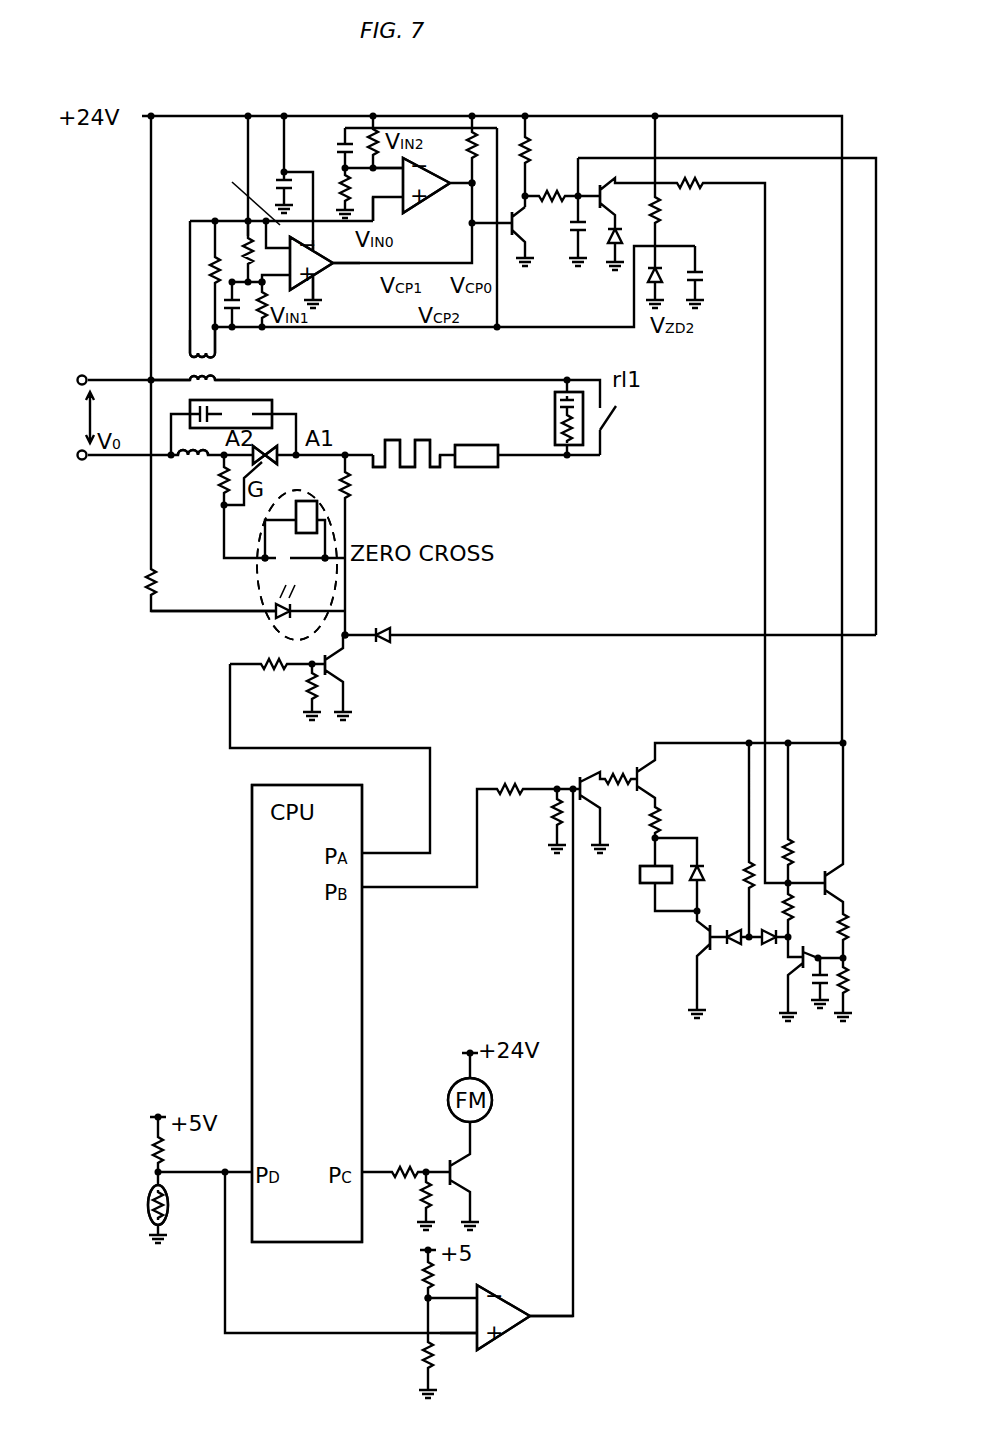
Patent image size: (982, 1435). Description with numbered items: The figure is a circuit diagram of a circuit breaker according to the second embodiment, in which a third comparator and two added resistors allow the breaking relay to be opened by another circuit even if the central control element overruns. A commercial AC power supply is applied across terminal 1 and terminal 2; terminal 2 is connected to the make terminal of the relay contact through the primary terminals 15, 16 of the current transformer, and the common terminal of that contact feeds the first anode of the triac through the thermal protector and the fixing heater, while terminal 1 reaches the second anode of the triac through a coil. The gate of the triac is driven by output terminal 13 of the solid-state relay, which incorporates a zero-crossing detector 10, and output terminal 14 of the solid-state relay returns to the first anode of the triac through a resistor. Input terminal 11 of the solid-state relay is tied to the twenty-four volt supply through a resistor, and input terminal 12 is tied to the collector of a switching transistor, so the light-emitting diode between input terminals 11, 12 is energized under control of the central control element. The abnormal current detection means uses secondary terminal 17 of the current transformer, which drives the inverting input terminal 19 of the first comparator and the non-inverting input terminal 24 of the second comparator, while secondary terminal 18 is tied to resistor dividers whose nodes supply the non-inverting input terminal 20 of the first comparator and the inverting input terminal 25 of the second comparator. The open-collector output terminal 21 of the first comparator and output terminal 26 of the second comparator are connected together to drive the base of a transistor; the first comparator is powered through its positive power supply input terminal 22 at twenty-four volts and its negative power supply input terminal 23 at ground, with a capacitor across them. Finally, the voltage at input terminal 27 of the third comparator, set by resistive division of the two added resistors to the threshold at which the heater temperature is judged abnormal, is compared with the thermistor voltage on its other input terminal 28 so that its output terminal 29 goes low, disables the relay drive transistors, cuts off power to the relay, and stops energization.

The terminal 1 is at (67, 456).
The terminal 2 is at (67, 381).
The zero-crossing detector 10 is at (332, 518).
The input terminal of the solid-state relay 11 is at (260, 614).
The input terminal of the solid-state relay 12 is at (348, 633).
The output terminal of the solid-state relay 13 is at (262, 563).
The output terminal of the solid-state relay 14 is at (338, 572).
The primary terminal 15 is at (165, 383).
The primary terminal 16 is at (210, 390).
The secondary terminal 17 is at (180, 360).
The secondary terminal 18 is at (214, 348).
The inverting input terminal of the comparator CP1 19 is at (246, 225).
The non-inverting input terminal of the comparator CP1 20 is at (269, 272).
The output terminal of the comparator CP1 21 is at (336, 268).
The positive power supply input terminal of the comparator CP1 22 is at (331, 243).
The negative power supply input terminal of the comparator CP1 23 is at (318, 292).
The non-inverting input terminal of the comparator CP2 24 is at (378, 221).
The inverting input terminal of the comparator CP2 25 is at (402, 170).
The output terminal of the comparator CP2 26 is at (470, 182).
The input terminal of the comparator CP3 27 is at (474, 1297).
The comparator CP3 non-inverting input 28 is at (474, 1332).
The comparator CP3 output 29 is at (533, 1319).